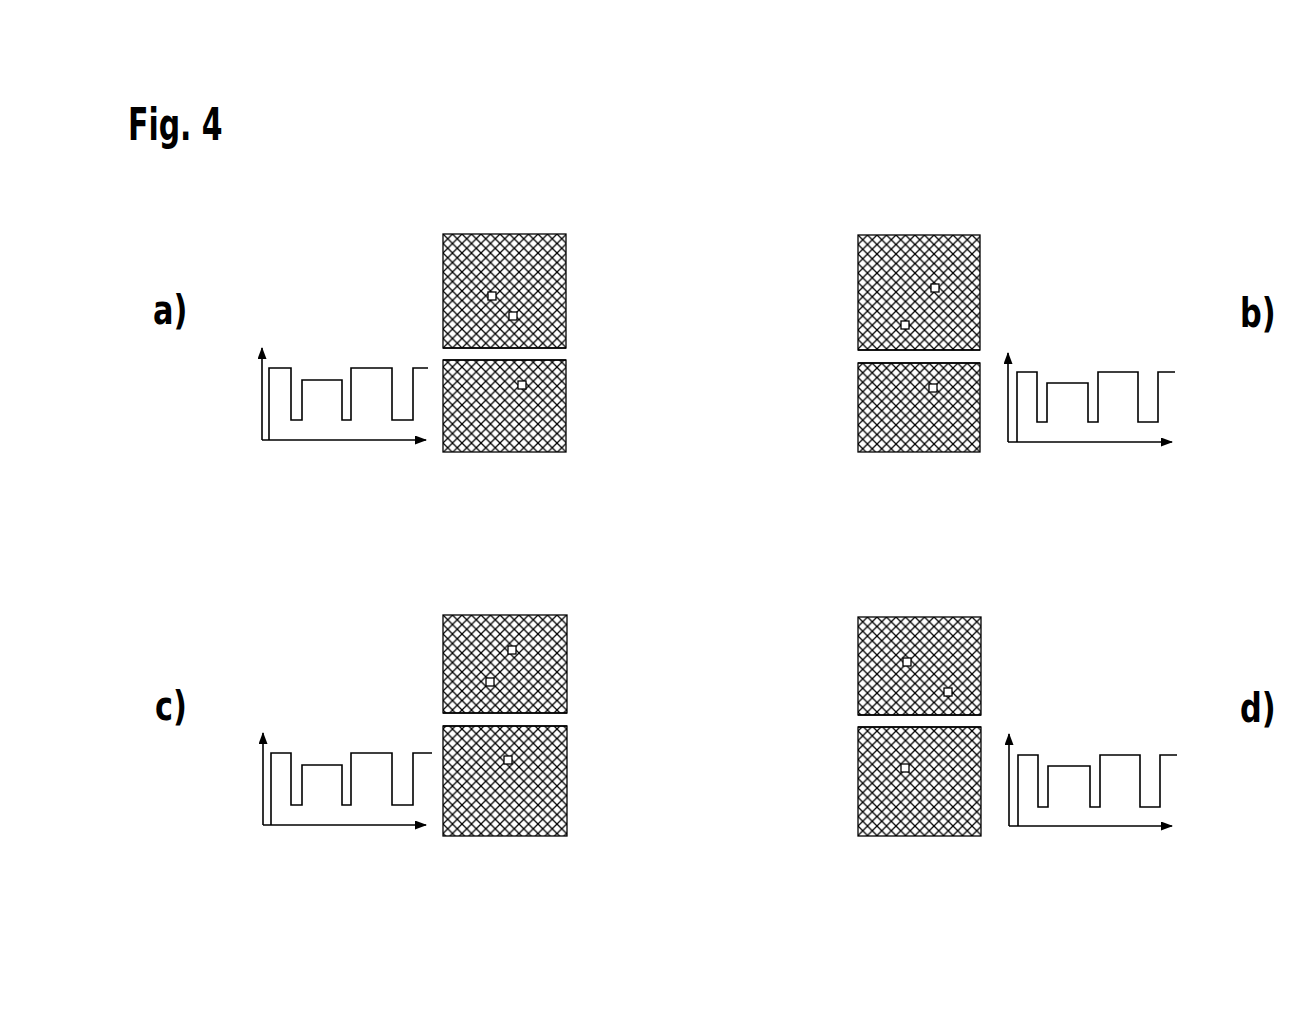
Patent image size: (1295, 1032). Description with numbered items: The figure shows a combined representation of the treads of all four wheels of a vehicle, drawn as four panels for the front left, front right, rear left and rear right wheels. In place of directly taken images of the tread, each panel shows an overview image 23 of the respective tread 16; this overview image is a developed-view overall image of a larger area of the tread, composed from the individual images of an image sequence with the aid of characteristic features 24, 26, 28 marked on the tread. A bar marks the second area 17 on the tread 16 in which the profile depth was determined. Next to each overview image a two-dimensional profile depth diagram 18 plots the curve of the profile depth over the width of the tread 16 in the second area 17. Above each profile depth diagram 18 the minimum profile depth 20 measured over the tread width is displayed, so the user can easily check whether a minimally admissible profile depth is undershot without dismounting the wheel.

The tread 16 is at (754, 493).
The second area 17 is at (562, 357).
The profile depth diagram 18 is at (368, 320).
The minimum profile depth 20 is at (332, 299).
The overview image 23 is at (470, 234).
The characteristic feature 24 is at (497, 294).
The characteristic feature 26 is at (517, 316).
The characteristic feature 28 is at (526, 385).